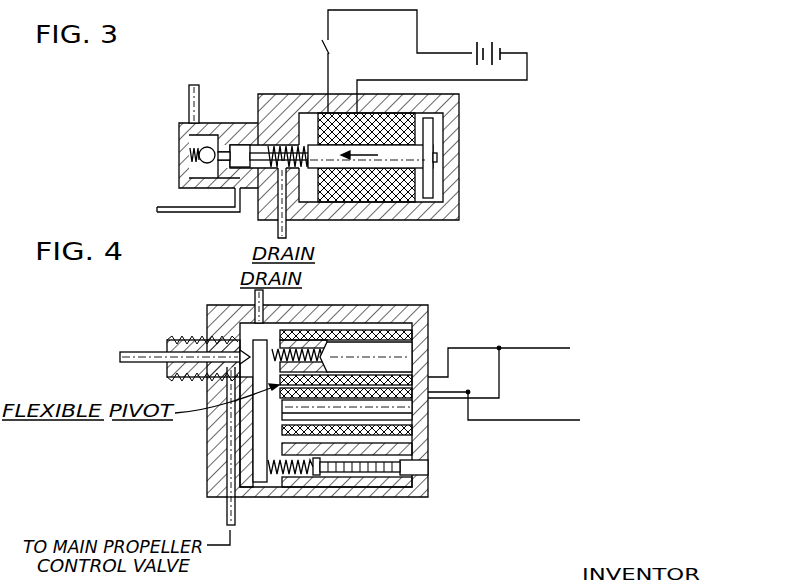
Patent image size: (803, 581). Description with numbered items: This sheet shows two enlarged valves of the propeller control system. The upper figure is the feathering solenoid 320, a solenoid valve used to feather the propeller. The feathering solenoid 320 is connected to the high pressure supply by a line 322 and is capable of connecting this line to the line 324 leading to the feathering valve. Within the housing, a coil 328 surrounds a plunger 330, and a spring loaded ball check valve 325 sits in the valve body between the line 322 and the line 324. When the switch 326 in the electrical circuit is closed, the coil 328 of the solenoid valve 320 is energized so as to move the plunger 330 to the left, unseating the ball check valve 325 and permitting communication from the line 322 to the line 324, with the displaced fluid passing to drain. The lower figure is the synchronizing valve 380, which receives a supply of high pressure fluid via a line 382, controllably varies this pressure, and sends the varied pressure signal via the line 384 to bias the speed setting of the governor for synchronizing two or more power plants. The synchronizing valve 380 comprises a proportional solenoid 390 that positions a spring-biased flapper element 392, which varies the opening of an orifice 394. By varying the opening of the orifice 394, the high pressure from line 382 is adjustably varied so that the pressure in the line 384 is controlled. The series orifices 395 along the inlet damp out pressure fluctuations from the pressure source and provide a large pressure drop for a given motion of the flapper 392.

In FIG. 3, the feathering solenoid 320 is at (258, 93).
In FIG. 3, the line 322 is at (189, 97).
In FIG. 3, the line 324 is at (200, 211).
In FIG. 3, the spring loaded ball check valve 325 is at (180, 151).
In FIG. 3, the switch 326 is at (326, 48).
In FIG. 3, the coil 328 is at (390, 202).
In FIG. 3, the plunger 330 is at (247, 148).
In FIG. 4, the synchronizing valve 380 is at (309, 497).
In FIG. 4, the line 382 is at (150, 351).
In FIG. 4, the line 384 is at (227, 518).
In FIG. 4, the proportional solenoid 390 is at (380, 340).
In FIG. 4, the flapper element 392 is at (260, 446).
In FIG. 4, the orifice 394 is at (247, 352).
In FIG. 4, the series orifices 395 is at (198, 345).